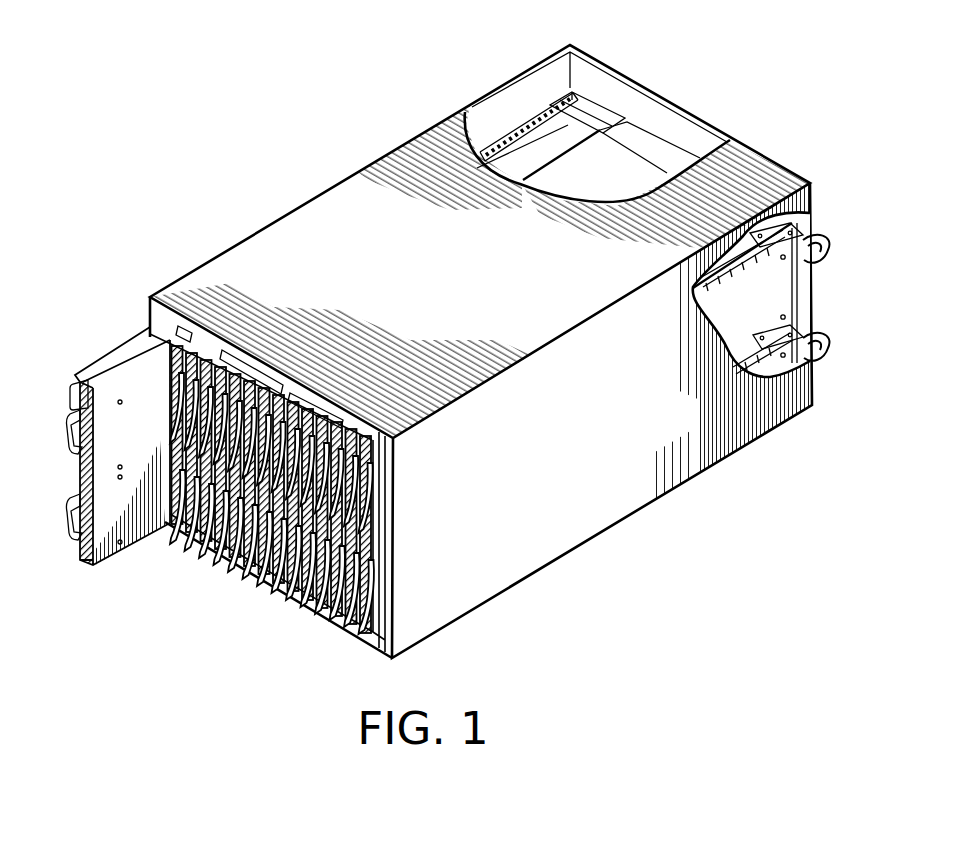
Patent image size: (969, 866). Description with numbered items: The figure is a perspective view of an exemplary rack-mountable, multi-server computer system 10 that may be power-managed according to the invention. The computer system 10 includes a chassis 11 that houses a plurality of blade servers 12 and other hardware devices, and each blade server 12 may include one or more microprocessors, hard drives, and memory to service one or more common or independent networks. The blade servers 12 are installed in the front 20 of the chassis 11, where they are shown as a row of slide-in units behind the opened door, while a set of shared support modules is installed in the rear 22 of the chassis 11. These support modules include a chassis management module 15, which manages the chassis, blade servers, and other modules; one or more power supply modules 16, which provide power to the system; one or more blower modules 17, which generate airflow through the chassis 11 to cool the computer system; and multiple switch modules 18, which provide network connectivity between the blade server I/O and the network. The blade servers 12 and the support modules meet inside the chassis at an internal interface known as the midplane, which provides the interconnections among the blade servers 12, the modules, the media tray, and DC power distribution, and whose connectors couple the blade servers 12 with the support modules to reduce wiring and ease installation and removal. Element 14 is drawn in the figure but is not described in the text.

The computer system 10 is at (275, 130).
The chassis 11 is at (237, 265).
The blade server 12 is at (90, 568).
The blade modules 14 is at (337, 630).
The chassis management module 15 is at (533, 120).
The power supply module 16 is at (600, 117).
The blower module 17 is at (605, 193).
The switch module 18 is at (770, 297).
The front 20 is at (205, 598).
The rear 22 is at (722, 130).